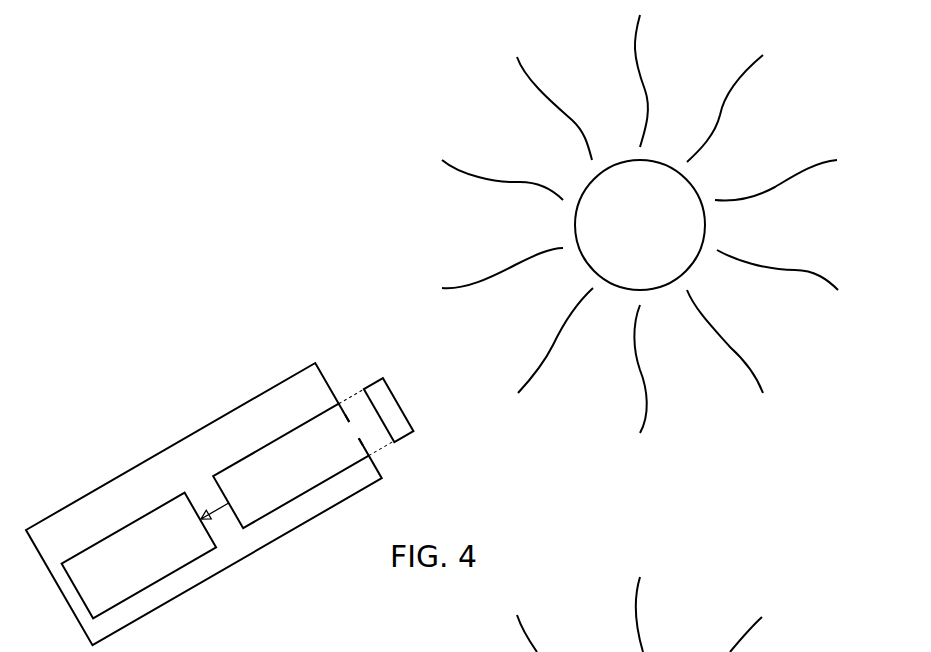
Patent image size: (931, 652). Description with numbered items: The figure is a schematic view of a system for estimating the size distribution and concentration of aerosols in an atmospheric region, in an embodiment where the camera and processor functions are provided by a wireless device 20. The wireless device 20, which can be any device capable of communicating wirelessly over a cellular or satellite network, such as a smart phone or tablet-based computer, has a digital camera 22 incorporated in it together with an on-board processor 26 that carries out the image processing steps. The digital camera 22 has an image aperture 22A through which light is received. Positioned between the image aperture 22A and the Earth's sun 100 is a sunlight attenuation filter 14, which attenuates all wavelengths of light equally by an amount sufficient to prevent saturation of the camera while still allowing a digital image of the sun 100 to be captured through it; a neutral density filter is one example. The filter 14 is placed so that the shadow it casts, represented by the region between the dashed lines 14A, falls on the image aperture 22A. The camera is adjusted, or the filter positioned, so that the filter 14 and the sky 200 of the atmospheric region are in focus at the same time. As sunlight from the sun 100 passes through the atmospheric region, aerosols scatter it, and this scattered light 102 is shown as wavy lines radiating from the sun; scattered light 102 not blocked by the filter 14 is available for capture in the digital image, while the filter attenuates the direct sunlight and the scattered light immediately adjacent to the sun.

The wireless device 20 is at (165, 449).
The on-board processor 26 is at (170, 575).
The digital camera 22 is at (303, 495).
The image aperture 22A is at (355, 430).
The sunlight attenuation filter 14 is at (405, 436).
The dashed lines 14A is at (349, 421).
The sky 200 is at (457, 350).
The Earth's sun 100 is at (707, 223).
The scattered light 102 is at (472, 178).